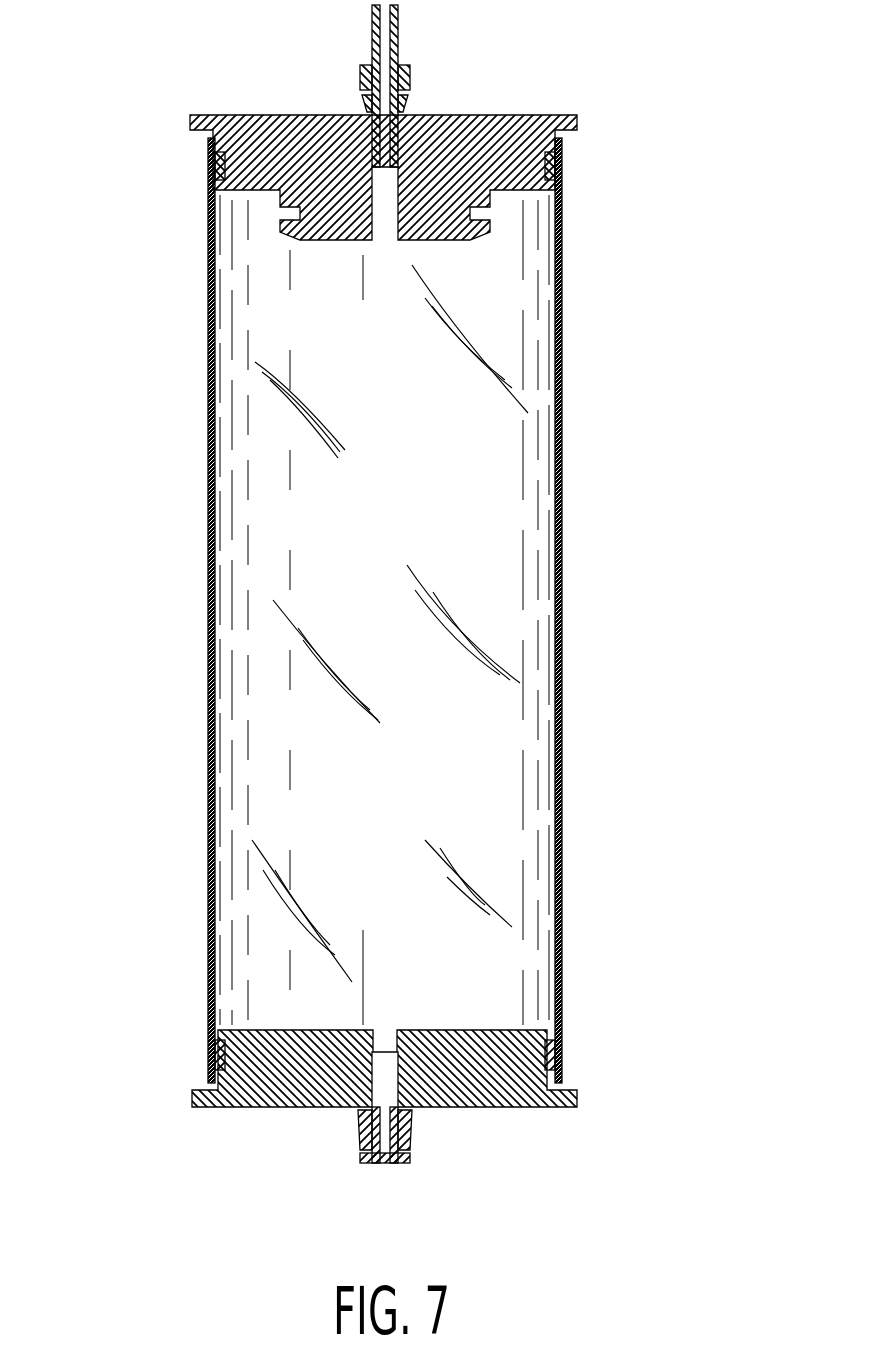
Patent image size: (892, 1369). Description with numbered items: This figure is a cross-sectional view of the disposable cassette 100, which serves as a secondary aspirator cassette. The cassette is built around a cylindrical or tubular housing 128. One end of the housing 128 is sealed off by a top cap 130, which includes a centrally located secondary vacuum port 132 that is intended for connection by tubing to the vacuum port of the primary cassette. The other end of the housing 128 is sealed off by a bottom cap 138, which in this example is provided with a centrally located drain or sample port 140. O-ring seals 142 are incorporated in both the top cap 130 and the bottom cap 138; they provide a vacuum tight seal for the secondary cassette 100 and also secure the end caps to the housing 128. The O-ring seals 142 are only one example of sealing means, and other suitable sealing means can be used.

The disposable cassette 100 is at (430, 608).
The housing 128 is at (563, 730).
The top cap 130 is at (578, 118).
The secondary vacuum port 132 is at (410, 75).
The bottom cap 138 is at (578, 1097).
The drain or sample port 140 is at (410, 1128).
The O-ring seals 142 is at (208, 175).